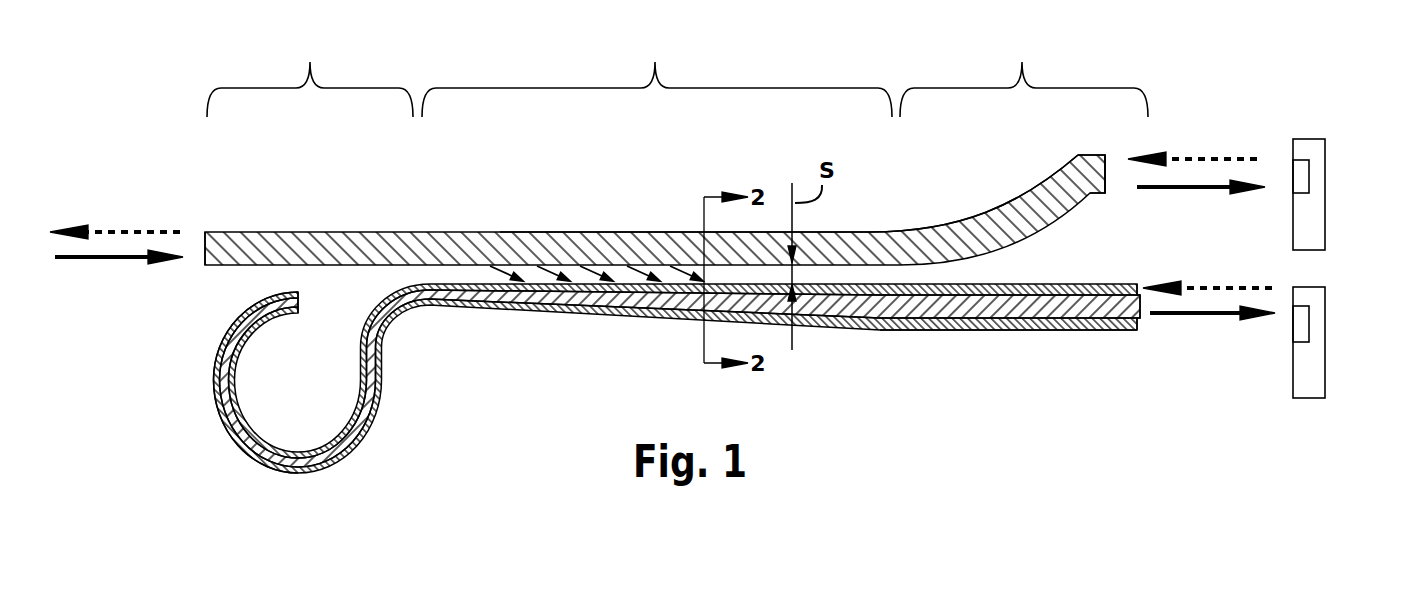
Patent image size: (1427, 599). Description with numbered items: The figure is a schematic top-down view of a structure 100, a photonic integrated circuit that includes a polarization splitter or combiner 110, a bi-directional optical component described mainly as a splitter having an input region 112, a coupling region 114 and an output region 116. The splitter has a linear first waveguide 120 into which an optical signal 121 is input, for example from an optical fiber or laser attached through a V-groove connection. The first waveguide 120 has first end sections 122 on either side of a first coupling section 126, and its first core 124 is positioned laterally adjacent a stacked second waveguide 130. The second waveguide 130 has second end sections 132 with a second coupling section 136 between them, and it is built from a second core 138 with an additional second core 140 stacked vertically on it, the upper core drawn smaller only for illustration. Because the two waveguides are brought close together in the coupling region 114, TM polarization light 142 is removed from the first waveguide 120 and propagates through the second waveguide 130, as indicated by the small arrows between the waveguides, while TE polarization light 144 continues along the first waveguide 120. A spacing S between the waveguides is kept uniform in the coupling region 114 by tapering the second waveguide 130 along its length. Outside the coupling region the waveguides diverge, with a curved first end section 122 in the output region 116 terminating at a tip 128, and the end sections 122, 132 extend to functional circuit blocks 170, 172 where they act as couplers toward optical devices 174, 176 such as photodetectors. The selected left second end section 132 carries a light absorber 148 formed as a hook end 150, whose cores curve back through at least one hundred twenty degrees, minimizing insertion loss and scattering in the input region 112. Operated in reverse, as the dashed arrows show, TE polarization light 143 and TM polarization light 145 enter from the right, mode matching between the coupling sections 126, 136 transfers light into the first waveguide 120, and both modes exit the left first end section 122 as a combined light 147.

The structure 100 is at (203, 222).
The polarization splitter or combiner 110 is at (773, 223).
The input region 112 is at (310, 73).
The coupling region 114 is at (657, 73).
The output region 116 is at (1024, 73).
The first waveguide 120 is at (448, 232).
The optical signal 121 is at (92, 258).
The first end sections 122 is at (220, 266).
The first core 124 is at (870, 232).
The first coupling section 126 is at (675, 230).
The tip of first layer 128 is at (1093, 195).
The second waveguide 130 is at (634, 393).
The second end sections 132 is at (1140, 335).
The second coupling section 136 is at (893, 312).
The second core 138 is at (1027, 333).
The additional second core 140 is at (945, 322).
The TM polarization light 142 is at (1178, 317).
The TE polarization light 143 is at (1200, 158).
The TE polarization light 144 is at (1190, 190).
The TM polarization light 145 is at (1215, 285).
The combined light 147 is at (120, 232).
The light absorber 148 is at (212, 399).
The hook end 150 is at (243, 460).
The functional circuit block 170 is at (1307, 150).
The functional circuit block 172 is at (1310, 365).
The optical device 174 is at (1310, 178).
The optical device 176 is at (1300, 312).